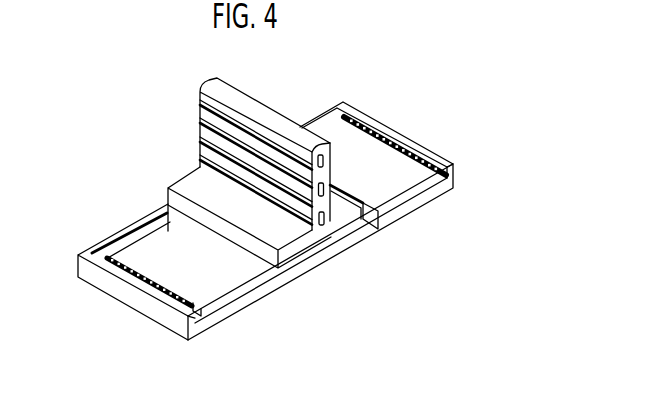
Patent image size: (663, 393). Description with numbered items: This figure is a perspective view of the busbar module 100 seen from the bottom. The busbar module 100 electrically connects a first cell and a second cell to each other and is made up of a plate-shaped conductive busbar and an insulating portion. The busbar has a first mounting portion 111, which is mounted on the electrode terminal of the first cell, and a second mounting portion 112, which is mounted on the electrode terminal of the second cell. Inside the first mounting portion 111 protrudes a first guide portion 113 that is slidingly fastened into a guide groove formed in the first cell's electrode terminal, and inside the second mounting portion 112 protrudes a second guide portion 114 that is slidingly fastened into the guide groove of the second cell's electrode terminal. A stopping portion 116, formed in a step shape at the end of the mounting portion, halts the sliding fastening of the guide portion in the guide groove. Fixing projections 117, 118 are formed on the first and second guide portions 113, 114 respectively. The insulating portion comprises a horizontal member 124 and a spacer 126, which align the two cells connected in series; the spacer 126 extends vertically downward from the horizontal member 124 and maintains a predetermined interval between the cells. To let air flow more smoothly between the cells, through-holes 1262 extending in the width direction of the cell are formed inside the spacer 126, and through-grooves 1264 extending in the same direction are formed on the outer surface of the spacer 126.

The busbar module 100 is at (104, 108).
The first mounting portion 111 is at (420, 186).
The second mounting portion 112 is at (231, 295).
The first guide portion 113 is at (433, 170).
The second guide portion 114 is at (186, 322).
The stopping portion 116 is at (124, 242).
The fixing projection 117 is at (417, 156).
The fixing projection 118 is at (163, 288).
The horizontal member 124 is at (353, 213).
The spacer 126 is at (372, 212).
The through-holes 1262 is at (323, 152).
The through-grooves 1264 is at (322, 165).